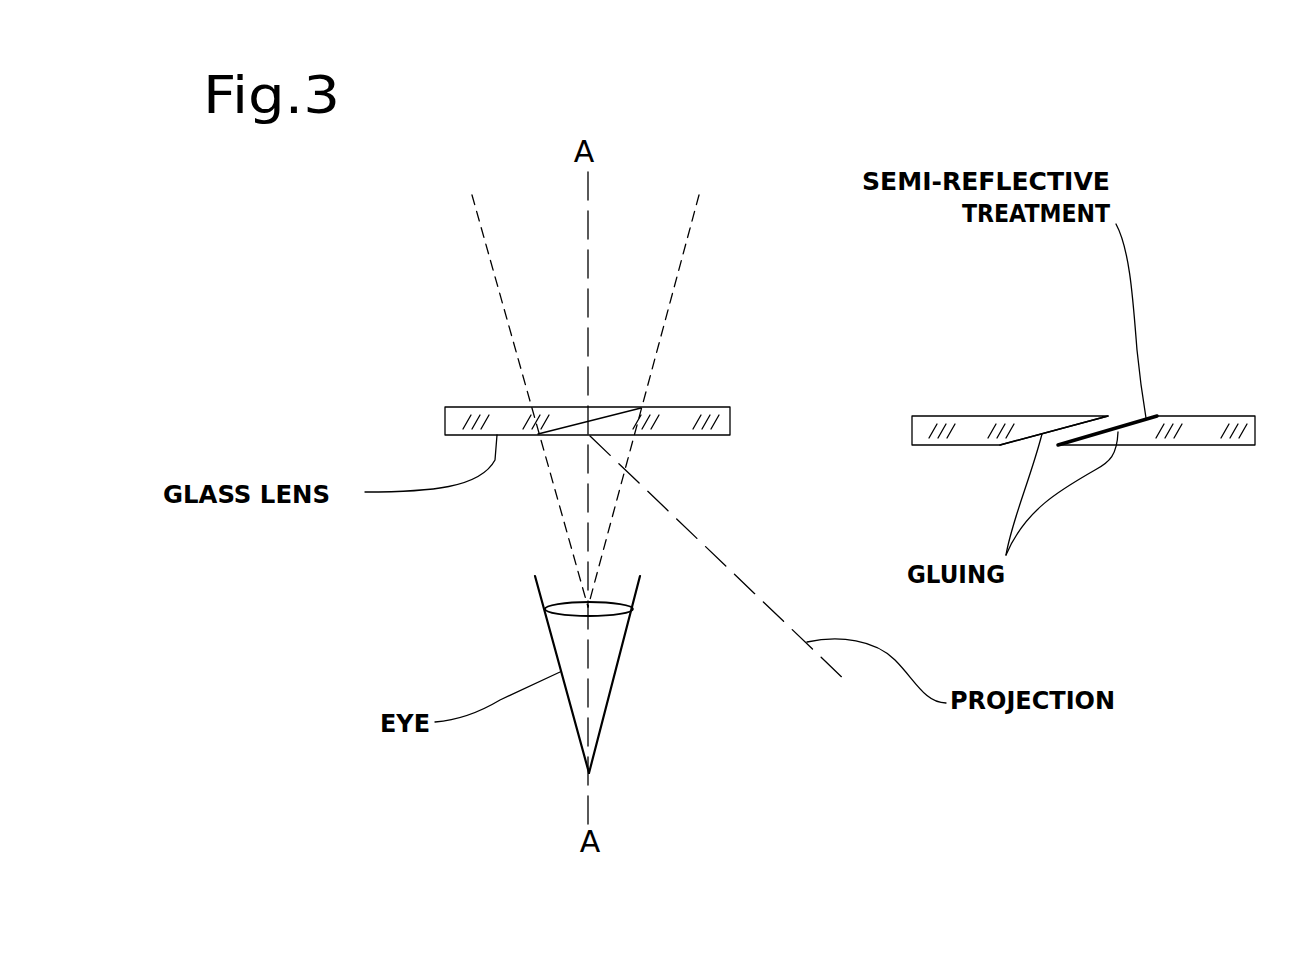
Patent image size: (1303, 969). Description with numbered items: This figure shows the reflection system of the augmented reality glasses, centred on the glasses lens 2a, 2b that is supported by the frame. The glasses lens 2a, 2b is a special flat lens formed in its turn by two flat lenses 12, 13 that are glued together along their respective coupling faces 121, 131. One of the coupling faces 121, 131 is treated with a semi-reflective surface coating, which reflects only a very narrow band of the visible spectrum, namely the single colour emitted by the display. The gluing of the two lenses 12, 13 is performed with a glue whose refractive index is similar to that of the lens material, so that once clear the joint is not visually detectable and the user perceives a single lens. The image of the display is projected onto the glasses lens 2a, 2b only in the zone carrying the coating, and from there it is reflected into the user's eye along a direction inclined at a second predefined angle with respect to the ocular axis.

The glasses lens 2a is at (645, 342).
The glasses lens 2b is at (693, 407).
The lens 12 is at (965, 416).
The lens 13 is at (1197, 445).
The coupling face 121 is at (1063, 416).
The coupling face 131 is at (1150, 416).